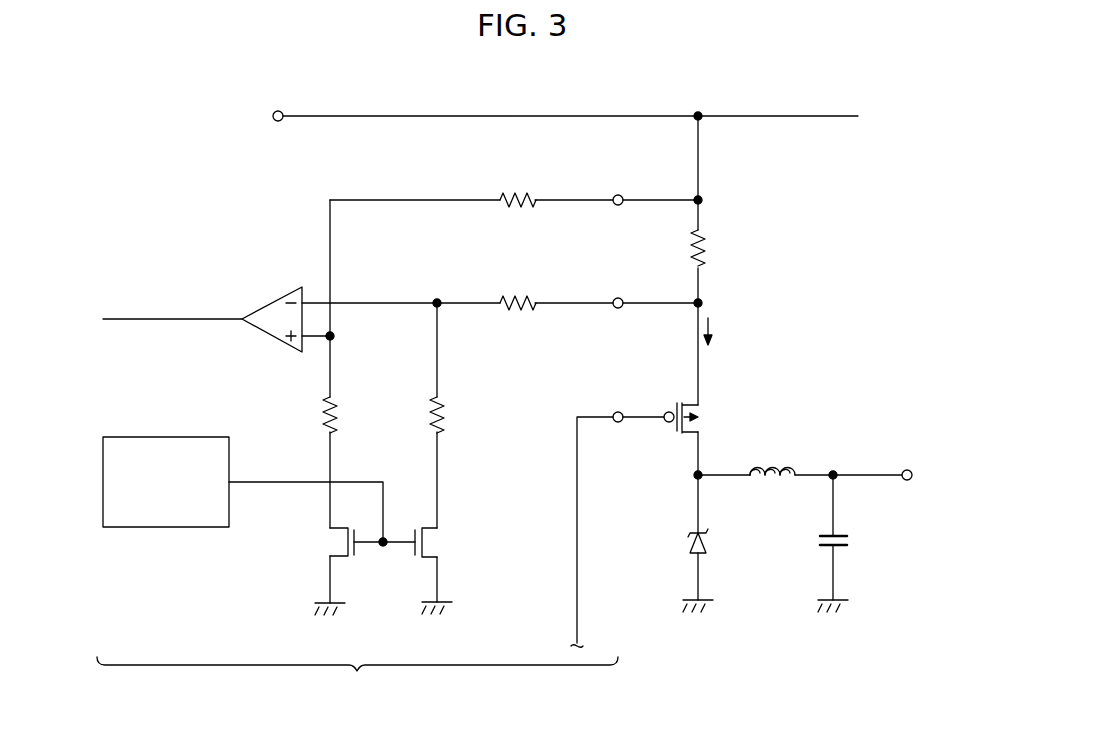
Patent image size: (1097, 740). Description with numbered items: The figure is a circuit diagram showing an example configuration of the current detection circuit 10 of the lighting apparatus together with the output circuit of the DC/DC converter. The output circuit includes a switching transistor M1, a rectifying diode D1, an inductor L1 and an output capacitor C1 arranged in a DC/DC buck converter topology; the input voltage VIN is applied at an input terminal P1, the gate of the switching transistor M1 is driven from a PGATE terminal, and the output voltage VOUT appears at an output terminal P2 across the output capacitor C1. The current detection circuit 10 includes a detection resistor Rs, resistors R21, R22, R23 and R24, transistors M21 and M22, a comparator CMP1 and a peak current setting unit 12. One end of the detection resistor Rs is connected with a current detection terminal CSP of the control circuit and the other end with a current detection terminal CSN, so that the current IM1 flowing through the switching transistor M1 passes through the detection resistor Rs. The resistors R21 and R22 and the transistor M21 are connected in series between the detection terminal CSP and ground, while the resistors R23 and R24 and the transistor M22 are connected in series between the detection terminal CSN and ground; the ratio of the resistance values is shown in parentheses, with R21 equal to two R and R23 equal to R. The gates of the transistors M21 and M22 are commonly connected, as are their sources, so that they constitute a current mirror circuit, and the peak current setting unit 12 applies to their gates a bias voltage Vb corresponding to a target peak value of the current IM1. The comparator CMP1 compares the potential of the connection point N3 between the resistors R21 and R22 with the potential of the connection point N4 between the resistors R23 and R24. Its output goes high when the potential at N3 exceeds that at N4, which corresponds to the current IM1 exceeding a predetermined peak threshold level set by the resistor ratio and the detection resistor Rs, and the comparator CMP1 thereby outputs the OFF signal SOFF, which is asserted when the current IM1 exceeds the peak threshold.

The input terminal P1 is at (279, 110).
The input voltage VIN is at (249, 116).
The current detection terminal CSP is at (619, 195).
The current detection terminal CSN is at (619, 298).
The detection resistor Rs is at (708, 250).
The current flowing through the switching transistor IM1 is at (726, 334).
The resistor R21 is at (518, 207).
The resistor R23 is at (518, 310).
The resistor R22 is at (344, 417).
The resistor R24 is at (448, 417).
The connection point N3 is at (335, 338).
The connection point N4 is at (437, 300).
The comparator CMP1 is at (256, 305).
The OFF signal SOFF is at (172, 311).
The peak current setting unit 12 is at (164, 528).
The bias voltage Vb is at (306, 499).
The transistor M21 is at (322, 542).
The transistor M22 is at (440, 542).
The gate terminal PGATE is at (617, 412).
The switching transistor M1 is at (704, 415).
The inductor L1 is at (785, 463).
The output voltage VOUT is at (900, 463).
The output terminal P2 is at (906, 481).
The rectifying diode D1 is at (710, 545).
The output capacitor C1 is at (850, 541).
The current detection circuit 10 is at (357, 680).